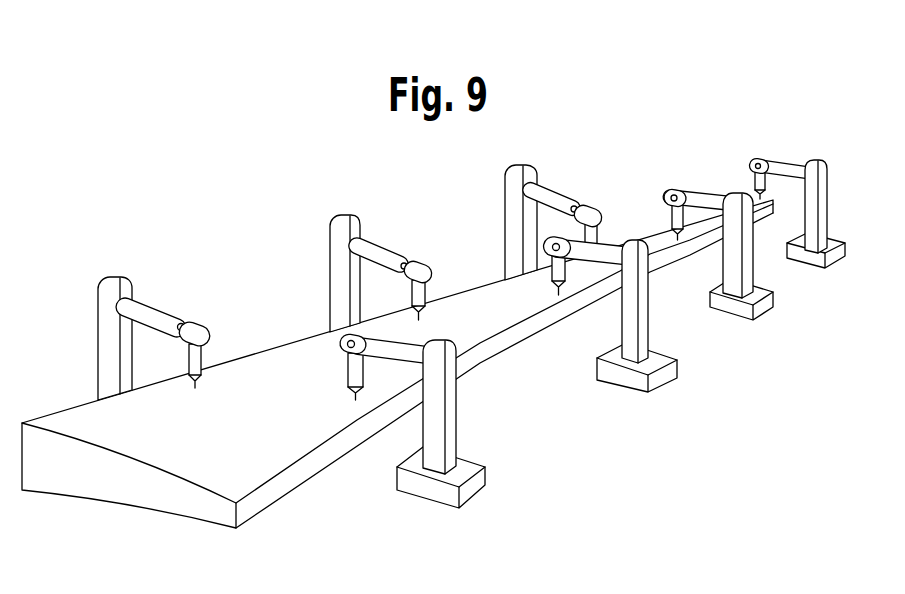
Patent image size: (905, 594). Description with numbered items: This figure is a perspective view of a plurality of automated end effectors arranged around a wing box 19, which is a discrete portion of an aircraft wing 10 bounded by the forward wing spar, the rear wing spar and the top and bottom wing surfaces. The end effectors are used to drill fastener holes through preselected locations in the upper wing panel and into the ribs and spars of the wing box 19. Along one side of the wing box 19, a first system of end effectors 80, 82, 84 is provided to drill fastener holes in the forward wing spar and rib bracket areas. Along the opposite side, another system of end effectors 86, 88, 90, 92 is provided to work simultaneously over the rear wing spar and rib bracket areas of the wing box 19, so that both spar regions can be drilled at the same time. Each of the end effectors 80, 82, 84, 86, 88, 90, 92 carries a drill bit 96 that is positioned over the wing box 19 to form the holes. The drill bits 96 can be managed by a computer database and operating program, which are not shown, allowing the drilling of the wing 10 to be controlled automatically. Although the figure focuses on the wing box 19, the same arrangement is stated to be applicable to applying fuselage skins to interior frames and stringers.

The aircraft wing 10 is at (270, 350).
The wing box 19 is at (126, 506).
The end effector 80 is at (97, 345).
The end effector 82 is at (328, 228).
The end effector 84 is at (505, 197).
The end effector 86 is at (457, 435).
The end effector 88 is at (643, 330).
The end effector 90 is at (750, 273).
The end effector 92 is at (827, 217).
The drill bit 96 is at (198, 382).